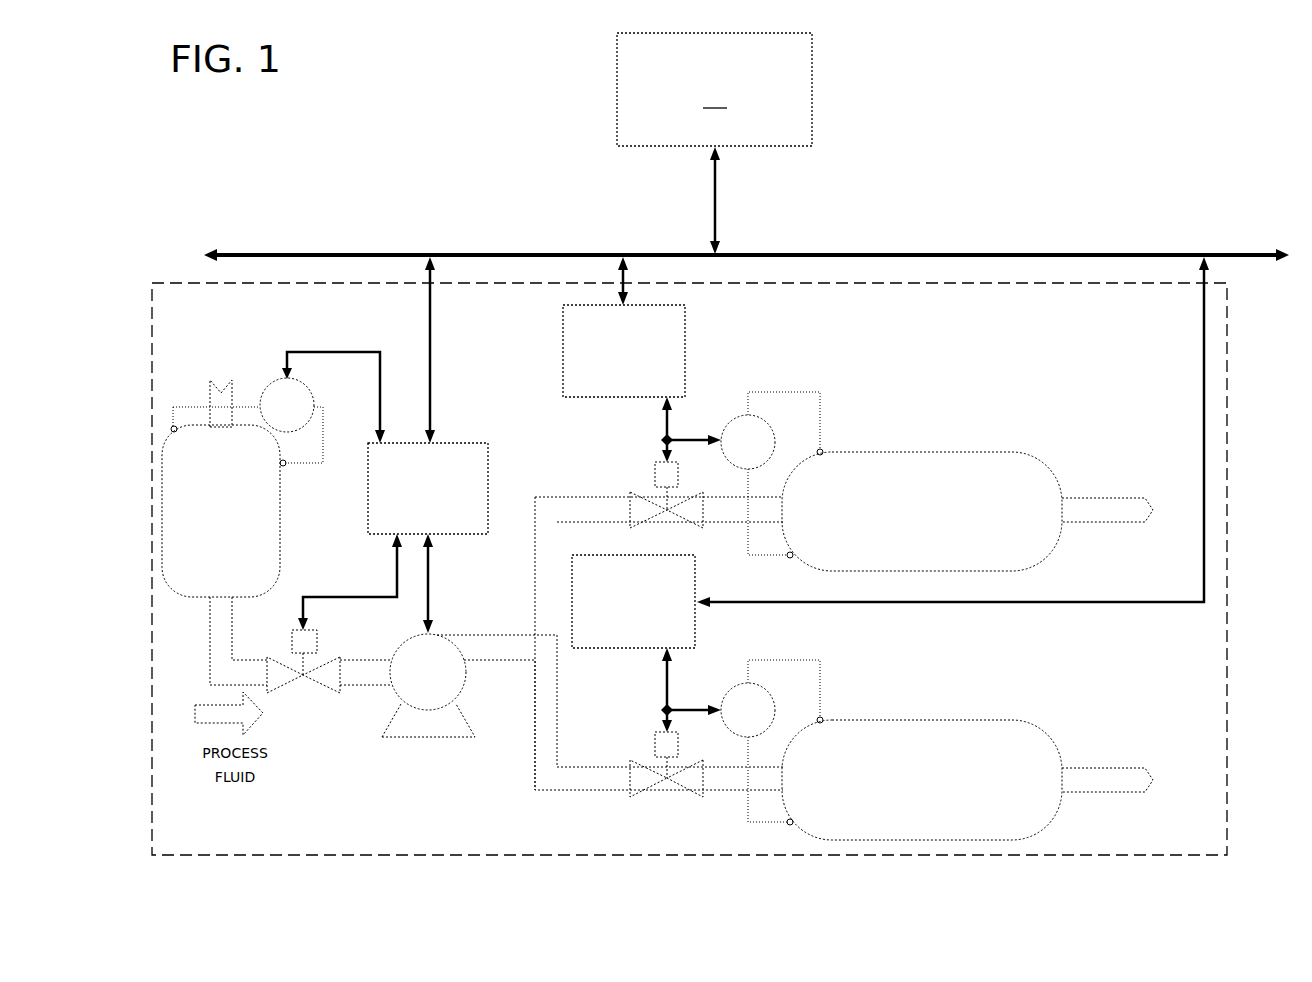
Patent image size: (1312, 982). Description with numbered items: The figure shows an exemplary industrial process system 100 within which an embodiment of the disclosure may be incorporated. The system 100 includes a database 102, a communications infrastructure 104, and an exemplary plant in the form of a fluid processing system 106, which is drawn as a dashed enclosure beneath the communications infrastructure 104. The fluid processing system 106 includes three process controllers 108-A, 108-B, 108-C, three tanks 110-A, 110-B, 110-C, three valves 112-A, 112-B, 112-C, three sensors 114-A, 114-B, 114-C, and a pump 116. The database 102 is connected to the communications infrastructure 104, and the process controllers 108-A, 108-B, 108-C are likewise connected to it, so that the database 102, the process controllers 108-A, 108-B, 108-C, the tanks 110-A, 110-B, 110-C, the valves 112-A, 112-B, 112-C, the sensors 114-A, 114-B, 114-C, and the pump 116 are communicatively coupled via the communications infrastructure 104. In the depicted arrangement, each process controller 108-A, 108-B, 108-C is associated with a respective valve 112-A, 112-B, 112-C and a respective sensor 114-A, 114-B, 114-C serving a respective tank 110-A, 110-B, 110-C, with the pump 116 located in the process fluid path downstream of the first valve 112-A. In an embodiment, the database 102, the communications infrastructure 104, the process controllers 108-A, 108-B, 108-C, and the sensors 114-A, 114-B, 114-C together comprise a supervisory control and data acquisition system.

The system 100 is at (497, 76).
The database 102 is at (714, 143).
The communications infrastructure 104 is at (290, 253).
The fluid processing system 106 is at (1228, 358).
The process controller 108-A is at (488, 448).
The process controller 108-B is at (685, 340).
The process controller 108-C is at (616, 650).
The tank 110-A is at (280, 533).
The tank 110-B is at (940, 452).
The tank 110-C is at (942, 720).
The valve 112-A is at (317, 645).
The valve 112-B is at (655, 475).
The valve 112-C is at (655, 745).
The sensor 114-A is at (268, 390).
The sensor 114-B is at (733, 418).
The sensor 114-C is at (733, 688).
The pump 116 is at (428, 740).